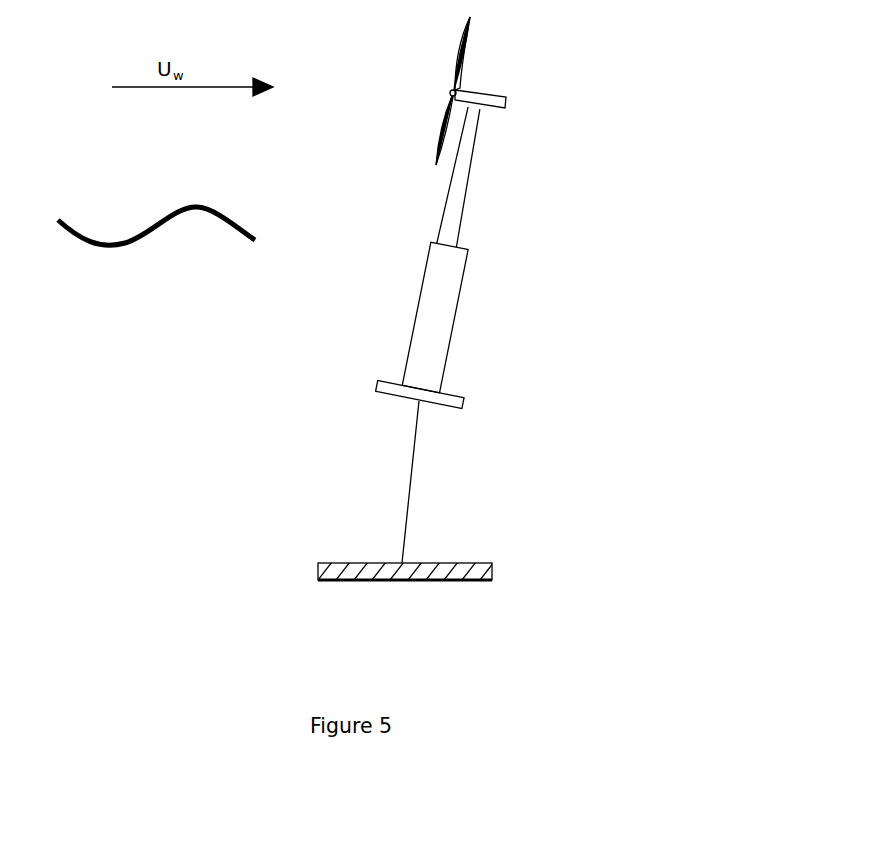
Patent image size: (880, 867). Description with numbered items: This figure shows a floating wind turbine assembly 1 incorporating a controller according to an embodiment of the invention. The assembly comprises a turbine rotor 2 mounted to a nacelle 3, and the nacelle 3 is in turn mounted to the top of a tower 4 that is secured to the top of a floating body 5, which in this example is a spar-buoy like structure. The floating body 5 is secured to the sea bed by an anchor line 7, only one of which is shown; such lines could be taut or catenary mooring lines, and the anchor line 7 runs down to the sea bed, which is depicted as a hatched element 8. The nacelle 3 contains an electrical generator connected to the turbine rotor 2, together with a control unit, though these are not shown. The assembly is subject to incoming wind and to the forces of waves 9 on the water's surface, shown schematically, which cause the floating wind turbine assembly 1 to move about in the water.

The floating wind turbine assembly 1 is at (300, 430).
The turbine rotor 2 is at (463, 50).
The nacelle 3 is at (507, 98).
The tower 4 is at (460, 213).
The floating body 5 is at (443, 343).
The anchor line 7 is at (410, 510).
The seabed anchor 8 is at (390, 570).
The waves 9 is at (125, 246).